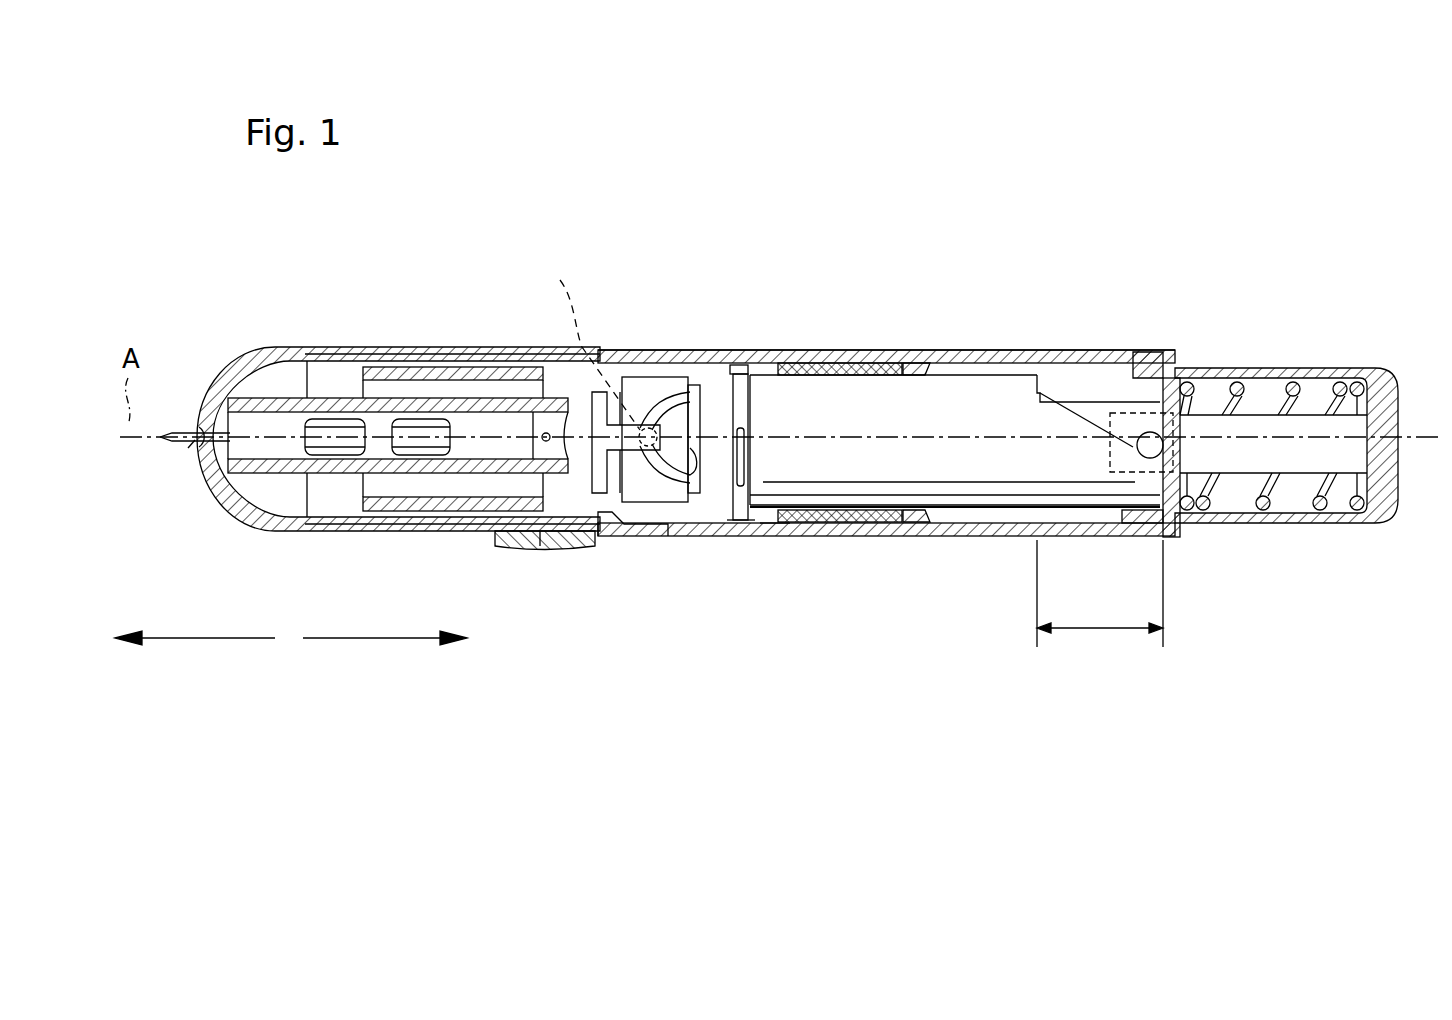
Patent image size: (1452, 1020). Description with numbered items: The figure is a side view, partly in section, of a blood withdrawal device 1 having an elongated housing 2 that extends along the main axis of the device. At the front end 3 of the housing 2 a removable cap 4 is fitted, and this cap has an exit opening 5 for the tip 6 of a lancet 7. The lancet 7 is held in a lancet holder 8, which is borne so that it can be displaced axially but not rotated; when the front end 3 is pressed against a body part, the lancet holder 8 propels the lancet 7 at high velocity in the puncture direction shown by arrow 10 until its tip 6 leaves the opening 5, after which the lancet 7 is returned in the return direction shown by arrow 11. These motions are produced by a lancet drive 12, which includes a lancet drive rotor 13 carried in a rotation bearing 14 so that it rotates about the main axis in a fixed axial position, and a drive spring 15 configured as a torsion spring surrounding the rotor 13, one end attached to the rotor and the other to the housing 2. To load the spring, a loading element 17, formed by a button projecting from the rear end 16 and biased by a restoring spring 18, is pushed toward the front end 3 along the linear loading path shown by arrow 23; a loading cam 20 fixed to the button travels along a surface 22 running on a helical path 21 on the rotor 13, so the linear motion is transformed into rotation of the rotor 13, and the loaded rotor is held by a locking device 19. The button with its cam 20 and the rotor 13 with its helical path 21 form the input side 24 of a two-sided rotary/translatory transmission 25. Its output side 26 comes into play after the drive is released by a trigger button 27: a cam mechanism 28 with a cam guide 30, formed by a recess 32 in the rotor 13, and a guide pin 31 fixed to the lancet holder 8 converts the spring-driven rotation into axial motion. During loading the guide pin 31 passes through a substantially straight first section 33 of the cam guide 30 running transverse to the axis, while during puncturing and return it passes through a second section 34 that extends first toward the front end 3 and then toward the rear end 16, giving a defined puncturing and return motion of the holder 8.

The blood withdrawal device 1 is at (797, 332).
The housing 2 is at (912, 340).
The front end 3 is at (188, 452).
The removable cap 4 is at (272, 532).
The exit opening 5 is at (205, 432).
The tip 6 is at (195, 427).
The lancet 7 is at (288, 420).
The lancet holder 8 is at (506, 396).
The puncture direction arrow 10 is at (247, 640).
The return direction arrow 11 is at (330, 640).
The lancet drive 12 is at (712, 528).
The lancet drive rotor 13 is at (946, 497).
The rotation bearing 14 is at (731, 363).
The drive spring 15 is at (850, 523).
The rear end 16 is at (1188, 537).
The loading element 17 is at (1302, 368).
The restoring spring 18 is at (1237, 382).
The locking device 19 is at (543, 550).
The loading cam 20 is at (1153, 458).
The helical path 21 is at (1097, 412).
The surface 22 is at (1080, 404).
The linear loading path arrow 23 is at (1098, 630).
The input side 24 is at (1122, 384).
The rotary/translatory transmission 25 is at (773, 546).
The output side 26 is at (643, 415).
The trigger button 27 is at (520, 548).
The cam mechanism 28 is at (668, 505).
The cam guide 30 is at (690, 378).
The guide pin 31 is at (587, 339).
The recess 32 is at (653, 465).
The first section 33 is at (692, 463).
The second section 34 is at (646, 372).